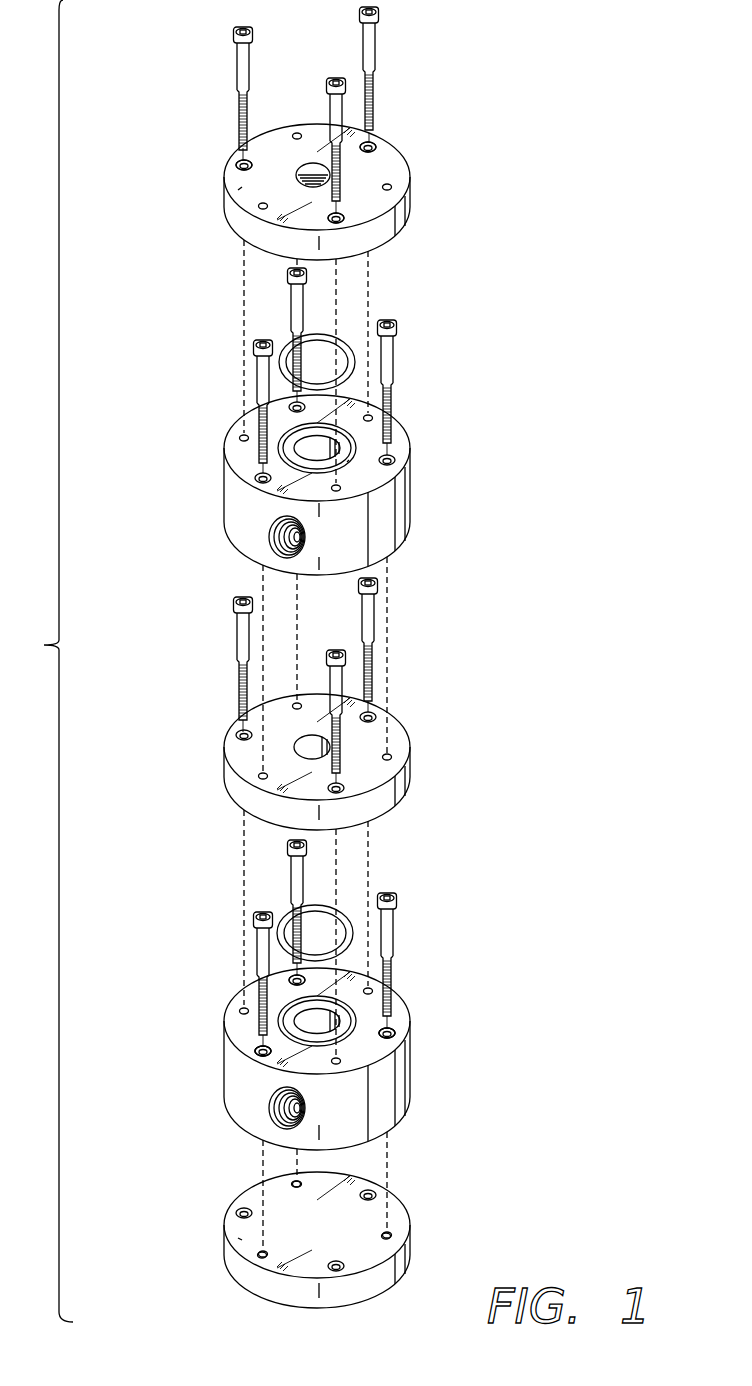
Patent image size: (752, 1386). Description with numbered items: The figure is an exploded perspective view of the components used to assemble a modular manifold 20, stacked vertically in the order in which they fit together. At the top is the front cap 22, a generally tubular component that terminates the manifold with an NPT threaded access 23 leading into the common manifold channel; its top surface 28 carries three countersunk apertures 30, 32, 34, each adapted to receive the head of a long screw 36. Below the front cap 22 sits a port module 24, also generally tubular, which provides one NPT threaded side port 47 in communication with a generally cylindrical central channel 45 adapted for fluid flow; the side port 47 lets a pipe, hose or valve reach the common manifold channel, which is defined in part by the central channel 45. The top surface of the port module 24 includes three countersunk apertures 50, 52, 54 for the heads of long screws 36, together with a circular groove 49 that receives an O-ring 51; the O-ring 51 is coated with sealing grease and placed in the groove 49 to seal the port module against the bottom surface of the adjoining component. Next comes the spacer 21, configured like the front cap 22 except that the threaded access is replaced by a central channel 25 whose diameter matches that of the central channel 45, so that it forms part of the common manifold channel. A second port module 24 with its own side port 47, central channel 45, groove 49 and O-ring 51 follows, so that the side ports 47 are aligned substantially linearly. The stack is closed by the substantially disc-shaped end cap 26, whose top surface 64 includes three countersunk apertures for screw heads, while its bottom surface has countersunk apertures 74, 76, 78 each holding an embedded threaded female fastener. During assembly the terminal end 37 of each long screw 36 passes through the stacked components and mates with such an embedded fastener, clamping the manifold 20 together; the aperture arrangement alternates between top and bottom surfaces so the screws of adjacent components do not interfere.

The modular manifold 20 is at (41, 661).
The spacer 21 is at (238, 762).
The front cap 22 is at (392, 168).
The NPT threaded access 23 is at (306, 170).
The port module 24 is at (232, 488).
The central channel 25 is at (305, 752).
The end cap 26 is at (392, 1215).
The top surface 28 is at (240, 193).
The countersunk aperture 30 is at (343, 220).
The countersunk aperture 32 is at (374, 146).
The countersunk aperture 34 is at (240, 168).
The long screw 36 is at (245, 60).
The terminal end 37 is at (262, 1030).
The central channel 45 is at (305, 448).
The NPT threaded side port 47 is at (278, 540).
The circular groove 49 is at (347, 463).
The countersunk aperture 50 is at (392, 1033).
The O-ring 51 is at (345, 345).
The countersunk aperture 52 is at (292, 982).
The countersunk aperture 54 is at (262, 1053).
The top surface 64 is at (240, 1240).
The countersunk aperture 74 is at (390, 1237).
The countersunk aperture 76 is at (299, 1182).
The countersunk aperture 78 is at (263, 1258).